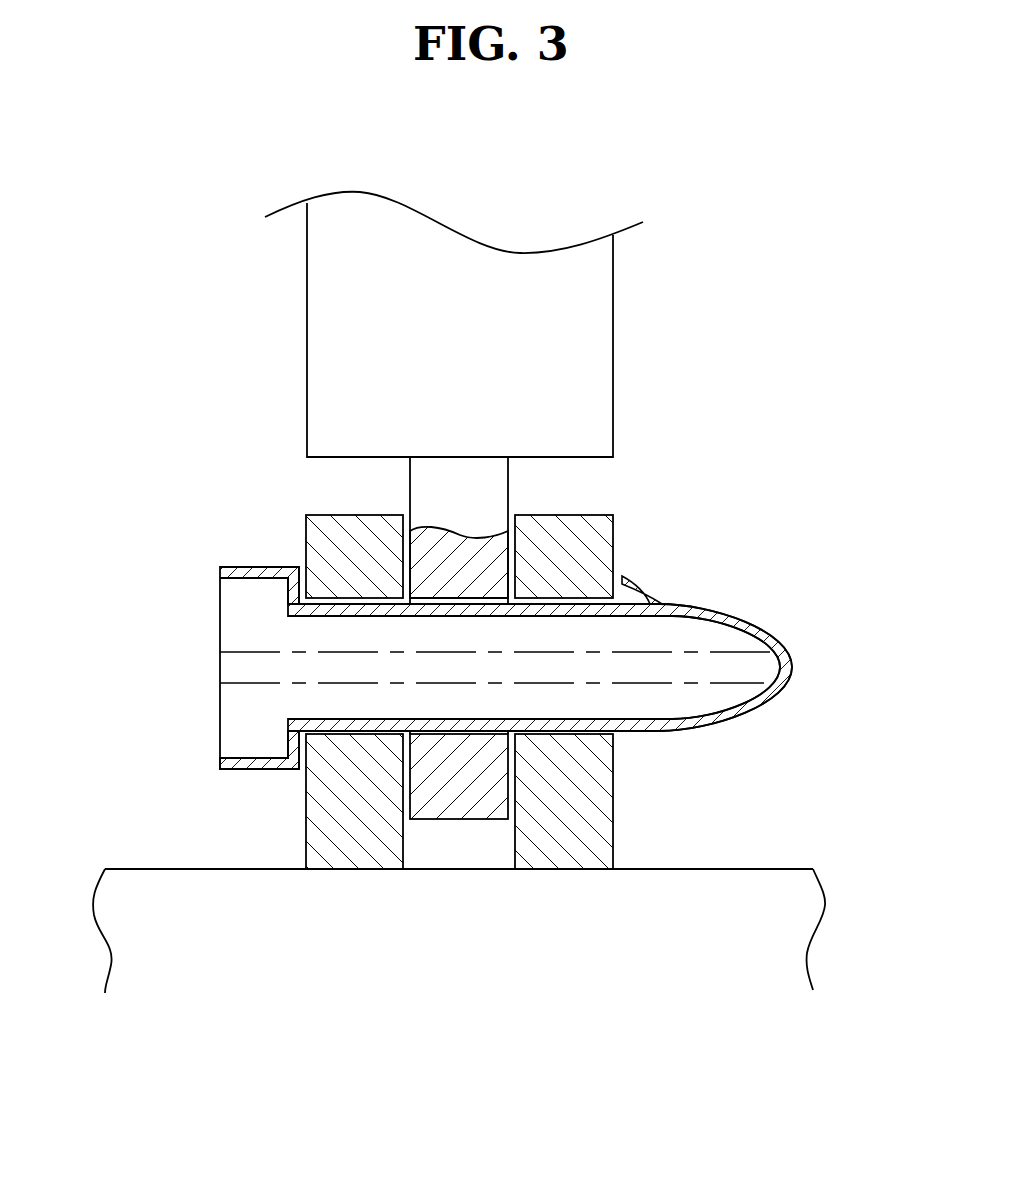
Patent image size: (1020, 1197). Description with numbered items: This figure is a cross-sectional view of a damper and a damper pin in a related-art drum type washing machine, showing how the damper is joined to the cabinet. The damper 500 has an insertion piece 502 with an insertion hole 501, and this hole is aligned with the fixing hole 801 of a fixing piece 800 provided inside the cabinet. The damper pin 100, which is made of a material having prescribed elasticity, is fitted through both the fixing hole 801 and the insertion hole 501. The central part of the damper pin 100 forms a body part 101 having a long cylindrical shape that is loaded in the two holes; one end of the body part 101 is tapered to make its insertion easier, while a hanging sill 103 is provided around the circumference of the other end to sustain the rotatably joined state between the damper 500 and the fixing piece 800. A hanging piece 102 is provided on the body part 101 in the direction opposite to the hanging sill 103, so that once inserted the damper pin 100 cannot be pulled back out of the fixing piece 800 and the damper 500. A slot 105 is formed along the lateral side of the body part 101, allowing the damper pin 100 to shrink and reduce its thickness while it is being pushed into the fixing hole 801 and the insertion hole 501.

The damper pin 100 is at (481, 649).
The body part 101 is at (755, 623).
The hanging piece 102 is at (643, 578).
The hanging sill 103 is at (248, 570).
The slot 105 is at (728, 682).
The damper 500 is at (322, 312).
The insertion hole 501 is at (455, 734).
The insertion piece 502 is at (490, 487).
The fixing piece 800 is at (350, 838).
The fixing hole 801 is at (563, 734).